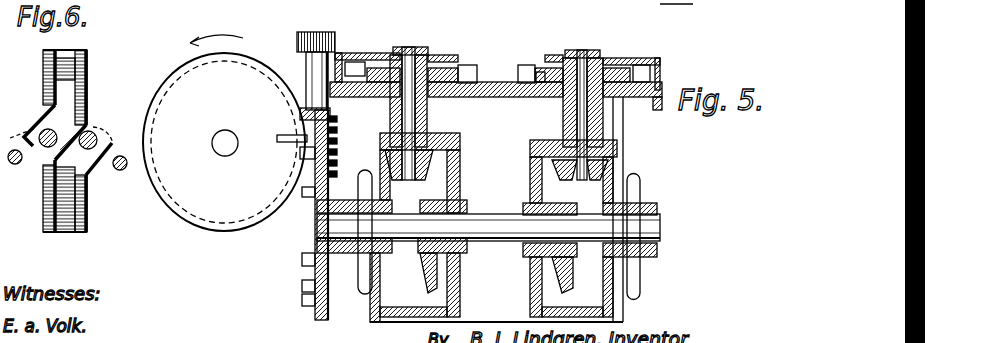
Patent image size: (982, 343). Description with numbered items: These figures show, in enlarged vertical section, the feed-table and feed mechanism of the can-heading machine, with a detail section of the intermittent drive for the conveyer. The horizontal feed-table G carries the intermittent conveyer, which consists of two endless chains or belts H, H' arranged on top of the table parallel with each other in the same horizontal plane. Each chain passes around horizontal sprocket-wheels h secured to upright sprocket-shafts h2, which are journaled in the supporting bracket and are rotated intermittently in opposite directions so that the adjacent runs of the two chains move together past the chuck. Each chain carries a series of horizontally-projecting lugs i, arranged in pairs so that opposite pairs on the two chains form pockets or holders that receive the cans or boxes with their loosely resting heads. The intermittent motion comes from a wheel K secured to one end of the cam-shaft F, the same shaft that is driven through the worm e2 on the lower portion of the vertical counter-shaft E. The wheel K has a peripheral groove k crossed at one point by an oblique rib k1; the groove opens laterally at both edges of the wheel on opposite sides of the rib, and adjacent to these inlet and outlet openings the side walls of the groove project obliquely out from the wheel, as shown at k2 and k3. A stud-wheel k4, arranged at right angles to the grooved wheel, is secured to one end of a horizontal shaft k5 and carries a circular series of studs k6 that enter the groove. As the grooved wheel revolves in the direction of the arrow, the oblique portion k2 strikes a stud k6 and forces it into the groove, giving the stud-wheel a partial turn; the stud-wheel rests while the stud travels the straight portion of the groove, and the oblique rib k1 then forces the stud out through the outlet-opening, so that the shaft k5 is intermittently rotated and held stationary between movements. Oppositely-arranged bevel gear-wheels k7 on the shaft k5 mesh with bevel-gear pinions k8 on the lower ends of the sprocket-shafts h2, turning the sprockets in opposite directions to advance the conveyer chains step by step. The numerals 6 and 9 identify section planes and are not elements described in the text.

In FIG. 5, the adjusting screw 6 is at (306, 95).
In FIG. 6, the grooved wheel K is at (88, 72).
In FIG. 5, the grooved wheel K is at (224, 133).
In FIG. 5, the cam-shaft F is at (227, 147).
In FIG. 6, the peripheral groove k is at (44, 72).
In FIG. 6, the oblique rib k1 is at (67, 142).
In FIG. 6, the projecting oblique portion of groove wall k2 is at (95, 168).
In FIG. 6, the projecting oblique portion of groove wall k3 is at (32, 122).
In FIG. 5, the projecting oblique portion of groove wall k3 is at (300, 128).
In FIG. 5, the stud-wheel k4 is at (304, 258).
In FIG. 5, the horizontal shaft k5 is at (497, 222).
In FIG. 6, the studs k6 is at (118, 155).
In FIG. 5, the studs k6 is at (304, 290).
In FIG. 5, the bevel gear-wheels k7 is at (424, 272).
In FIG. 5, the bevel-gear pinions k8 is at (433, 140).
In FIG. 5, the worm e2 is at (338, 138).
In FIG. 5, the vertical counter-shaft E is at (337, 62).
In FIG. 5, the conveyer chain H is at (412, 49).
In FIG. 5, the conveyer chain H' is at (558, 50).
In FIG. 5, the sprocket-wheels h is at (435, 75).
In FIG. 5, the sprocket-shafts h2 is at (410, 52).
In FIG. 5, the lugs i is at (470, 65).
In FIG. 5, the feed-table G is at (486, 86).
In FIG. 5, the housing 9 is at (499, 209).